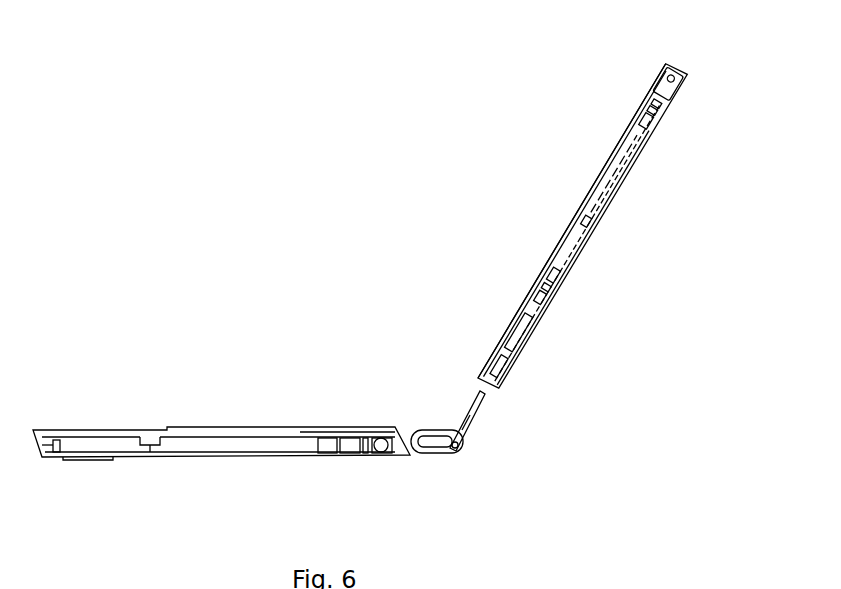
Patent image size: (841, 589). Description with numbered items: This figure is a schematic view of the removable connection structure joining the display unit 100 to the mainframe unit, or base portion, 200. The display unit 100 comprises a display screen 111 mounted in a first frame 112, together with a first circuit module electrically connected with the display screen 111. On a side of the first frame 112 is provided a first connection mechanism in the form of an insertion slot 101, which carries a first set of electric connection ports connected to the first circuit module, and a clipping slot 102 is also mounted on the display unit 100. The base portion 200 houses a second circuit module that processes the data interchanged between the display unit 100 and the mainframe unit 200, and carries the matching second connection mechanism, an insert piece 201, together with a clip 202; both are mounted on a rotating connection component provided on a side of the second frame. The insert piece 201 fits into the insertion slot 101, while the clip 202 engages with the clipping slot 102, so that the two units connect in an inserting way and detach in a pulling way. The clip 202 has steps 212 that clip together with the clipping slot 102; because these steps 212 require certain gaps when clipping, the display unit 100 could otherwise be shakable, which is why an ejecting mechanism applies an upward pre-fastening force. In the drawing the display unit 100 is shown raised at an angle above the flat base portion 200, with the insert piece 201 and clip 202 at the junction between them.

The display unit 100 is at (563, 127).
The display screen 111 is at (568, 222).
The first frame 112 is at (672, 65).
The insertion slot 101 is at (528, 337).
The clipping slot 102 is at (505, 370).
The mainframe unit 200 is at (79, 374).
The insert piece 201 is at (473, 398).
The clip 202 is at (462, 426).
The steps 212 is at (470, 418).